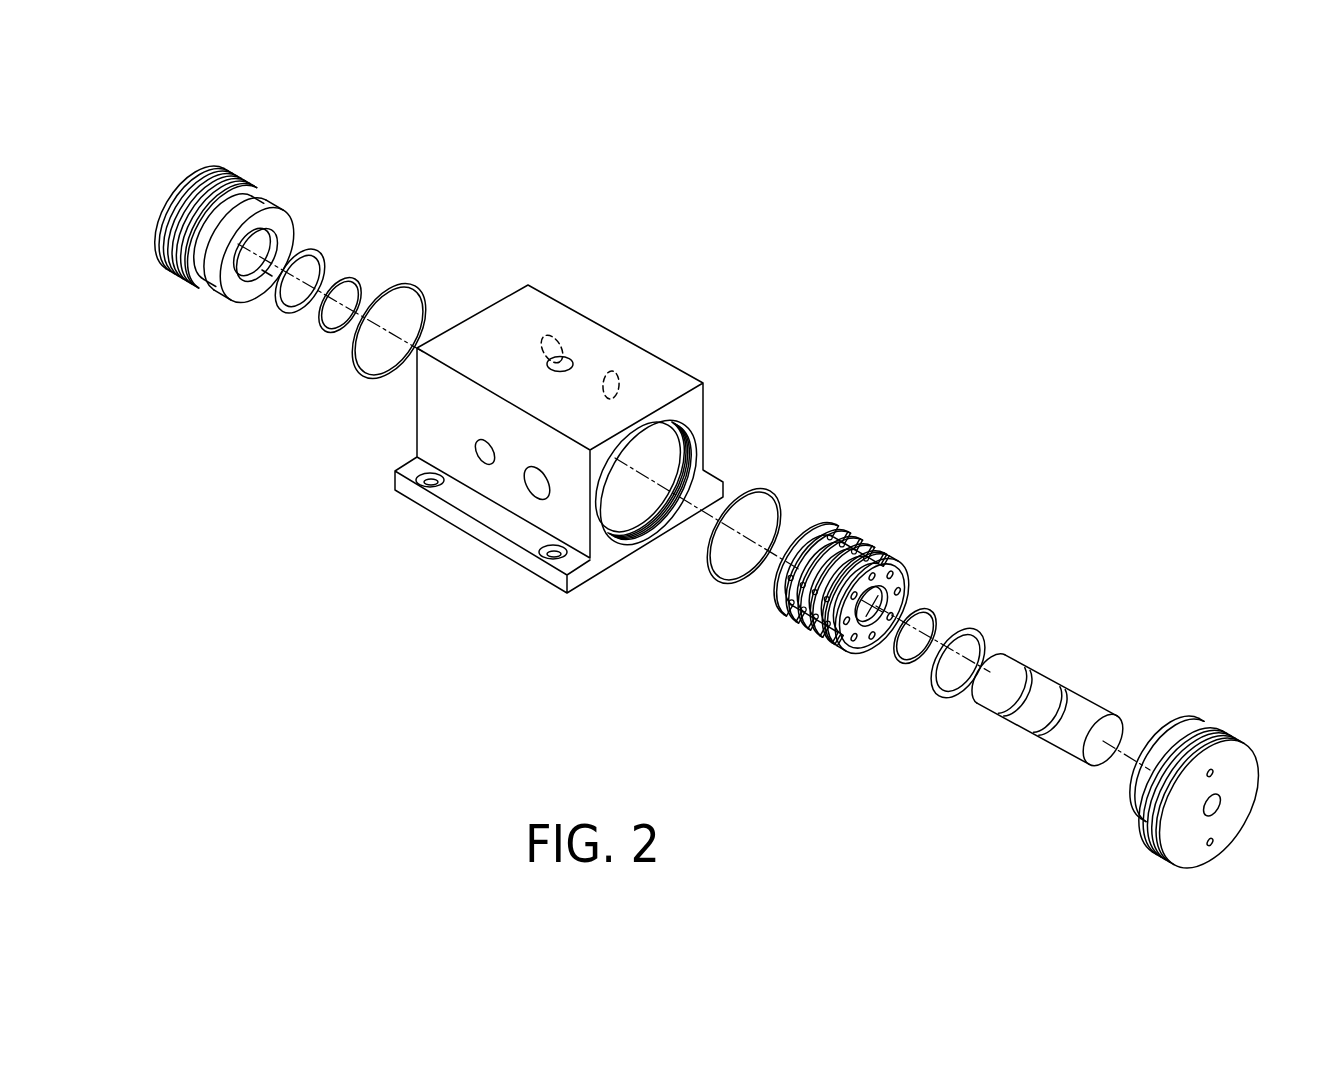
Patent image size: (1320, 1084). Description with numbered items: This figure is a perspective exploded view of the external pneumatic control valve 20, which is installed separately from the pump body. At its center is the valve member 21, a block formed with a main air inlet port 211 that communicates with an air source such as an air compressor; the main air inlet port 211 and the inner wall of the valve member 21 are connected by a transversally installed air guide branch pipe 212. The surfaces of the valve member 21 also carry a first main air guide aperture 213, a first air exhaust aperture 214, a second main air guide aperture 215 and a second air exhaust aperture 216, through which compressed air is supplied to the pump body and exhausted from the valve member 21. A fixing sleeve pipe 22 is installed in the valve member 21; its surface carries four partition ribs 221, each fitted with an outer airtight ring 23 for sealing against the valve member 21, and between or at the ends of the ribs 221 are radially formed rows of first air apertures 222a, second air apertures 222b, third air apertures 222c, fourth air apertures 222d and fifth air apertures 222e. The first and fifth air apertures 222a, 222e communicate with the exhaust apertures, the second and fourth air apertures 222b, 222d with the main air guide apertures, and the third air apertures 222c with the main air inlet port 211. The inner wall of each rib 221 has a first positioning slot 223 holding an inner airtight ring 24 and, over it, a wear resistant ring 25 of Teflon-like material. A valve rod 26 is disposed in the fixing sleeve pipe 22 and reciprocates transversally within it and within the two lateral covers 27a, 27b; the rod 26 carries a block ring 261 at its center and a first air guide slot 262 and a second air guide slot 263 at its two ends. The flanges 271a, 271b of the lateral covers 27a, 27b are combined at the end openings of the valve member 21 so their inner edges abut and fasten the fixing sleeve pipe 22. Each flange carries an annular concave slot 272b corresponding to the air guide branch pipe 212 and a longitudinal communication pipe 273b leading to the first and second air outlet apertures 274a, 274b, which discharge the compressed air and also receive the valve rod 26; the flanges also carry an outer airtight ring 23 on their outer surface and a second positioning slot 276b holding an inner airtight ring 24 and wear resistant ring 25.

The external pneumatic control valve 20 is at (680, 298).
The valve member 21 is at (547, 303).
The main air inlet port 211 is at (573, 362).
The air guide branch pipe 212 is at (623, 516).
The first main air guide aperture 213 is at (487, 455).
The first air exhaust aperture 214 is at (543, 350).
The second main air guide aperture 215 is at (616, 378).
The second air exhaust aperture 216 is at (535, 488).
The fixing sleeve pipe 22 is at (897, 587).
The partition ribs 221 is at (854, 549).
The first air apertures 222a is at (777, 565).
The second air apertures 222b is at (792, 612).
The third air apertures 222c is at (800, 632).
The fourth air apertures 222d is at (808, 632).
The fifth air apertures 222e is at (826, 637).
The first positioning slot 223 is at (877, 640).
The outer airtight ring 23 is at (400, 293).
The inner airtight ring 24 is at (321, 258).
The wear resistant ring 25 is at (348, 278).
The valve rod 26 is at (1067, 673).
The block ring 261 is at (1025, 732).
The first air guide slot 262 is at (1000, 715).
The second air guide slot 263 is at (1057, 741).
The lateral cover 27a is at (1217, 737).
The flange 271a is at (1138, 803).
The first air outlet aperture 274a is at (1215, 805).
The lateral cover 27b is at (237, 172).
The flange 271b is at (253, 203).
The annular concave slot 272b is at (195, 222).
The communication pipe 273b is at (227, 192).
The second air outlet aperture 274b is at (243, 278).
The second positioning slot 276b is at (267, 277).